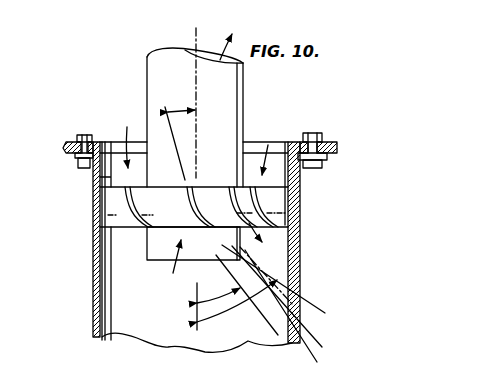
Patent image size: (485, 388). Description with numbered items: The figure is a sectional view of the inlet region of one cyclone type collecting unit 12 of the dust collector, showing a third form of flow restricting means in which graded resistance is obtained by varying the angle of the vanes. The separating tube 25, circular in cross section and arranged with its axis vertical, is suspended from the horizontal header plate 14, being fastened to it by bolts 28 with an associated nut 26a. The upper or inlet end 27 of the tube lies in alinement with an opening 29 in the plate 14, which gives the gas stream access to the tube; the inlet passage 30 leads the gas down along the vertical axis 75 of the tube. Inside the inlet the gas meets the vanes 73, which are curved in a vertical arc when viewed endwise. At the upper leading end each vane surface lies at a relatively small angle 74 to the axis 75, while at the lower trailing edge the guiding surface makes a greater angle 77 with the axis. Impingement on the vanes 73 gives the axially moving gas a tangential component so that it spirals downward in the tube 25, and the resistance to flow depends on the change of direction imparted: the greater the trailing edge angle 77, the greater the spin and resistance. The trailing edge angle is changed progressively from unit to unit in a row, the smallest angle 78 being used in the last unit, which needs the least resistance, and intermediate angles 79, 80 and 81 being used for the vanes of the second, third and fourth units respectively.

The cyclone type collecting unit 12 is at (303, 250).
The horizontal header plate 14 is at (62, 152).
The separating tube 25 is at (97, 322).
The nut 26a is at (329, 161).
The upper or inlet end 27 is at (92, 191).
The bolts 28 is at (86, 135).
The opening in plate 29 is at (286, 143).
The inlet tube 30 is at (244, 90).
The vanes 73 is at (153, 226).
The angle at leading end of vane 74 is at (168, 104).
The vertical axis of the tube 75 is at (195, 40).
The angle at trailing edge of vane 77 is at (226, 308).
The smallest trailing edge angle 78 is at (230, 300).
The intermediate vane angle 79 is at (320, 323).
The intermediate vane angle 80 is at (322, 345).
The intermediate vane angle 81 is at (313, 352).